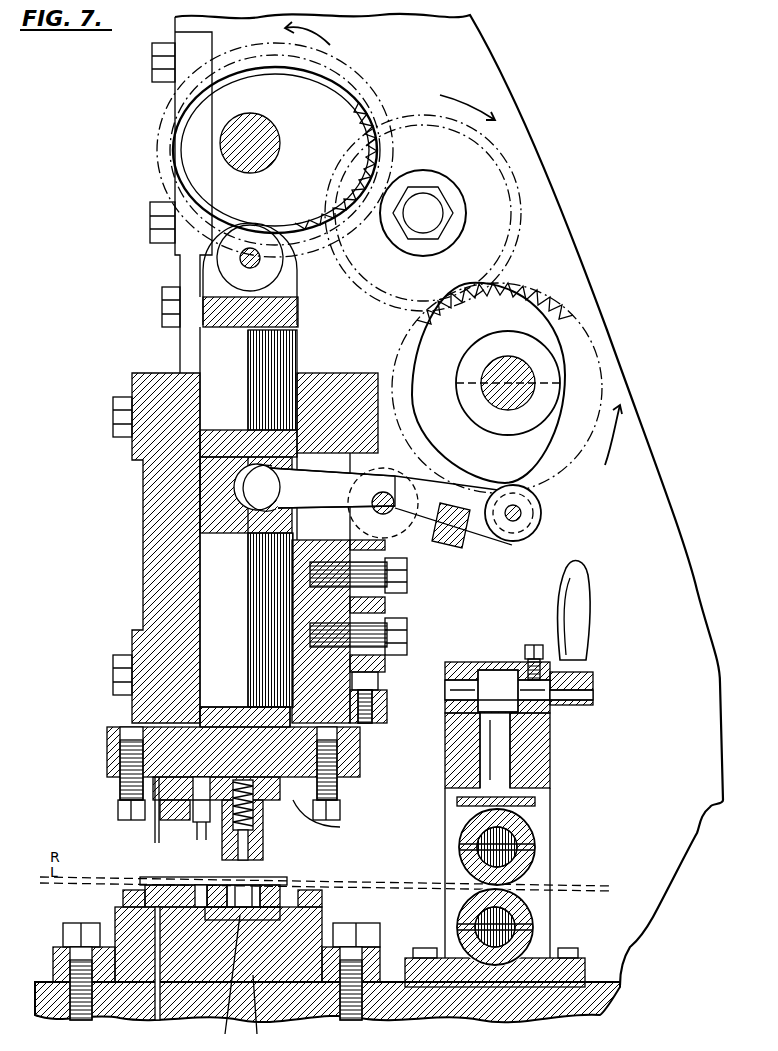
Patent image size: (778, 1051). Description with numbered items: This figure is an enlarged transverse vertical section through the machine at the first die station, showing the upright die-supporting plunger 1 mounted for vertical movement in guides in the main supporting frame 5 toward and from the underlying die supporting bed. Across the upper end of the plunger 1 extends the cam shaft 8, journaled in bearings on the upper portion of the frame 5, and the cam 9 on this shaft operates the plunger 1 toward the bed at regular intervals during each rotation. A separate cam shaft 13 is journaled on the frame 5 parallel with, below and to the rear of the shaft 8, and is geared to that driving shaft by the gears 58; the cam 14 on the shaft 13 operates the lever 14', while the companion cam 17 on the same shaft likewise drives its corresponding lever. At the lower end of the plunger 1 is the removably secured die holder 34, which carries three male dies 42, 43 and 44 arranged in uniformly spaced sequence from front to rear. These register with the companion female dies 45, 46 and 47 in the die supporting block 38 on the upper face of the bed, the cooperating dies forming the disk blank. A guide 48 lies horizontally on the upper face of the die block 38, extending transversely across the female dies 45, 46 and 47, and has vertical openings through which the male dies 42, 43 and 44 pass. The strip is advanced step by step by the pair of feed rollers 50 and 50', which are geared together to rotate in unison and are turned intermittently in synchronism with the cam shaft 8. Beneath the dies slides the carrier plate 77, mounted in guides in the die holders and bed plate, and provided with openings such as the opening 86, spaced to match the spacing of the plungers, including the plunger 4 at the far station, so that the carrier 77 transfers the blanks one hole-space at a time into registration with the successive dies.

The die-supporting plunger 1 is at (249, 475).
The die-supporting plunger 4 is at (254, 1013).
The main supporting frame 5 is at (150, 565).
The cam shaft 8 is at (221, 144).
The cam 9 is at (350, 100).
The cam shaft 13 is at (508, 358).
The cam 14 is at (510, 388).
The lever 14' is at (468, 529).
The cam 17 is at (107, 746).
The die holder 34 is at (328, 819).
The die supporting block 38 is at (200, 965).
The male die 42 is at (154, 838).
The male die 43 is at (198, 840).
The male die 44 is at (263, 838).
The female die 45 is at (125, 893).
The female die 46 is at (201, 890).
The female die 47 is at (250, 895).
The guide 48 is at (143, 880).
The feed roller 50 is at (517, 927).
The feed roller 50' is at (524, 847).
The gears 58 is at (323, 210).
The sliding carrier plate 77 is at (282, 915).
The opening 86 is at (225, 982).